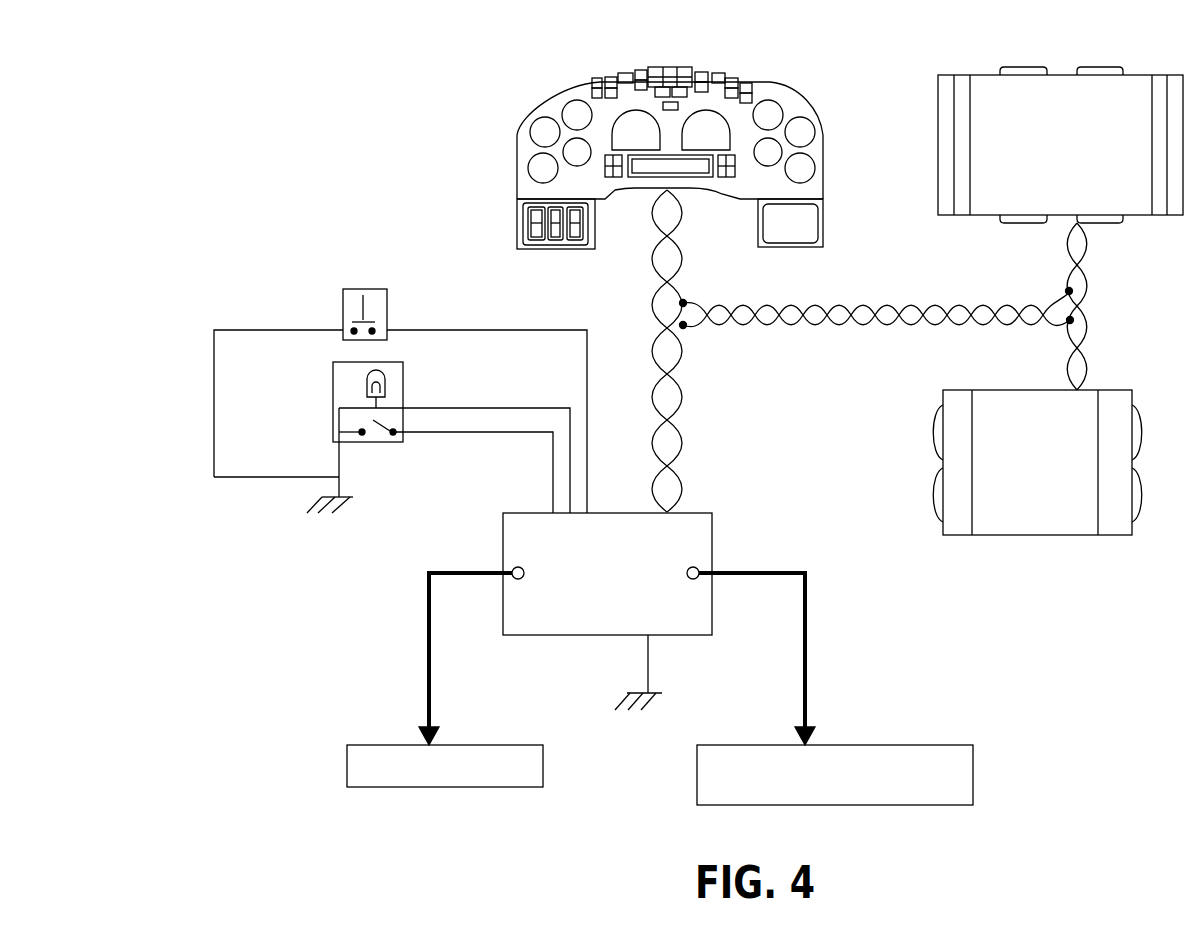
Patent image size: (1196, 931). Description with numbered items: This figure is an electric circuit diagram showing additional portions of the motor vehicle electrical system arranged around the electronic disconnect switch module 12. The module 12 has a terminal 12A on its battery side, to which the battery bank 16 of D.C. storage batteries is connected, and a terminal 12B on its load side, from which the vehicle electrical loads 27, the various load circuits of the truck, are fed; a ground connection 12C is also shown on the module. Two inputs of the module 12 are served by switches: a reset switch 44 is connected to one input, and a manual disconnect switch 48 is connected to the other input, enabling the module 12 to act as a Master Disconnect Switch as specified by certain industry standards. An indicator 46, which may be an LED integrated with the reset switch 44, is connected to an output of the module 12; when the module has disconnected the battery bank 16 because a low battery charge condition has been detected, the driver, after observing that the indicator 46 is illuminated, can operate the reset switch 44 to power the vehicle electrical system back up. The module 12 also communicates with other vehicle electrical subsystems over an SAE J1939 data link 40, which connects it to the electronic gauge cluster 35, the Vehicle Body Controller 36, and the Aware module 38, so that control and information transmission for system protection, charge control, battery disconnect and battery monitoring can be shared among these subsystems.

The electronic gauge cluster (EGC) 35 is at (620, 70).
The Vehicle Body Controller 36 is at (958, 75).
The Aware module 38 is at (960, 390).
The data link 40 is at (990, 300).
The manual disconnect switch 48 is at (387, 315).
The reset switch 44 is at (385, 378).
The indicator 46 is at (382, 428).
The electronic disconnect switch module 12 is at (712, 548).
The battery side terminal 12A is at (515, 580).
The load side terminal 12B is at (700, 580).
The ground terminal 12C is at (650, 658).
The battery bank 16 is at (510, 787).
The vehicle electrical loads 27 is at (920, 805).